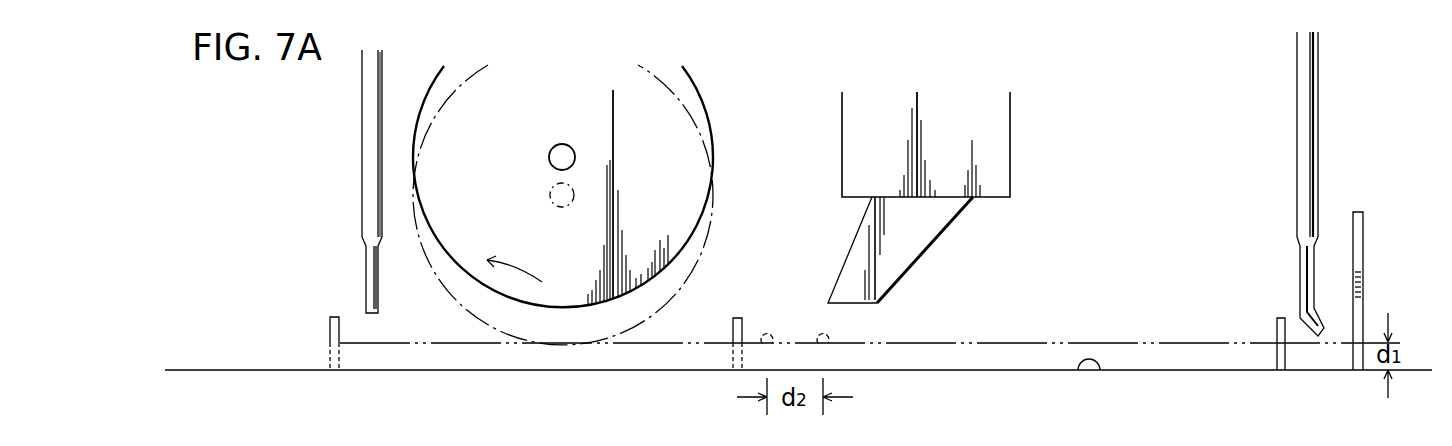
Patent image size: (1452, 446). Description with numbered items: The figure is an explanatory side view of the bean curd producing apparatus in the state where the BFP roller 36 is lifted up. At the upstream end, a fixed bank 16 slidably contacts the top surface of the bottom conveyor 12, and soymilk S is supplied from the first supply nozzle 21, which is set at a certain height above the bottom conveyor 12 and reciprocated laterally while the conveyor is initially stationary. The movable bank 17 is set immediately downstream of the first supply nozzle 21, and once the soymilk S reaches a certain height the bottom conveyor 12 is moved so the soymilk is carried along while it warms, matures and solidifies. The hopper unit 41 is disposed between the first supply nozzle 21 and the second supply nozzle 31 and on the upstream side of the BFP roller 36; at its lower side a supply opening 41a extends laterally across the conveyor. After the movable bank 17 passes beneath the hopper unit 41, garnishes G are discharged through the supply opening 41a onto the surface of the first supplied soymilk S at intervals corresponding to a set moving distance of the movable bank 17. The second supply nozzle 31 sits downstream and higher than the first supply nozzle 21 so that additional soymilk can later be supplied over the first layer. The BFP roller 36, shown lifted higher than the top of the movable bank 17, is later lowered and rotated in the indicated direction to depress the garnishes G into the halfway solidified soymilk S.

The bottom conveyor 12 is at (1090, 368).
The fixed bank 16 is at (1363, 258).
The movable bank 17 is at (330, 330).
The first supply nozzle 21 is at (1298, 184).
The second supply nozzle 31 is at (367, 212).
The BFP roller 36 is at (700, 102).
The hopper unit 41 is at (990, 137).
The supply opening 41a is at (910, 243).
The soymilk S is at (385, 343).
The garnishes G is at (774, 333).